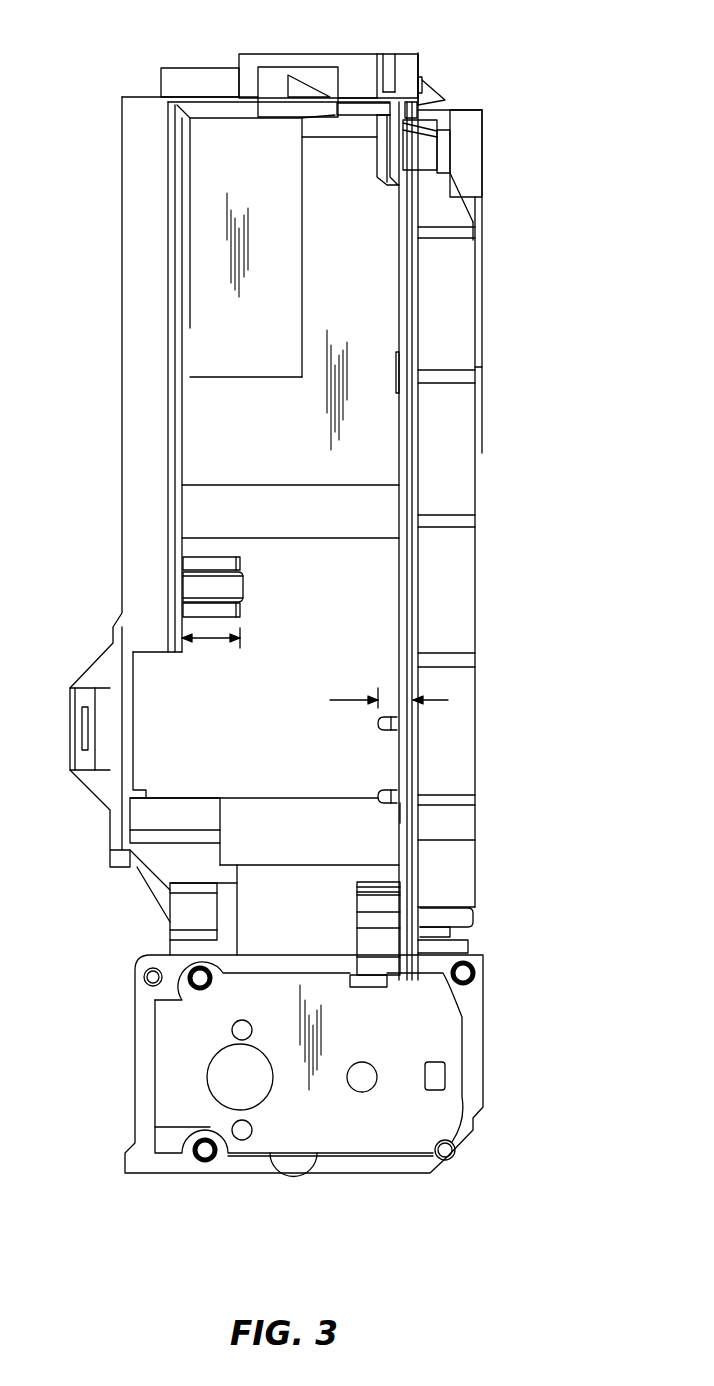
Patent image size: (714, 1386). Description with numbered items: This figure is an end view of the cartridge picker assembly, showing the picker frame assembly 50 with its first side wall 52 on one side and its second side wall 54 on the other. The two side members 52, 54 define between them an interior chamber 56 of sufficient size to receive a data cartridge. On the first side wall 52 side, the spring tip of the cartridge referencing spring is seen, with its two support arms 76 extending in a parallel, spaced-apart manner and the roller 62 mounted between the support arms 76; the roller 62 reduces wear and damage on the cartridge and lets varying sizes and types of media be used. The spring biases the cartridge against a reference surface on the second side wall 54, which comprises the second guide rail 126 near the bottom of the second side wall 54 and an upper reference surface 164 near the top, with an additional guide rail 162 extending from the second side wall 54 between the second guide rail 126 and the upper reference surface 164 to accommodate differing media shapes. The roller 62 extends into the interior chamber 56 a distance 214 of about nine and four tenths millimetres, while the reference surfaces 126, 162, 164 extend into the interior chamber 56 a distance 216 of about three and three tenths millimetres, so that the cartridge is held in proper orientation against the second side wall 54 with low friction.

The picker frame assembly 50 is at (346, 50).
The first side wall 52 is at (122, 363).
The second side wall 54 is at (477, 480).
The interior chamber 56 is at (370, 603).
The roller 62 is at (245, 585).
The support arms 76 is at (242, 567).
The second guide rail 126 is at (380, 797).
The additional guide rail 162 is at (380, 725).
The upper reference surface 164 is at (375, 163).
The distance 214 is at (213, 641).
The distance 216 is at (390, 690).